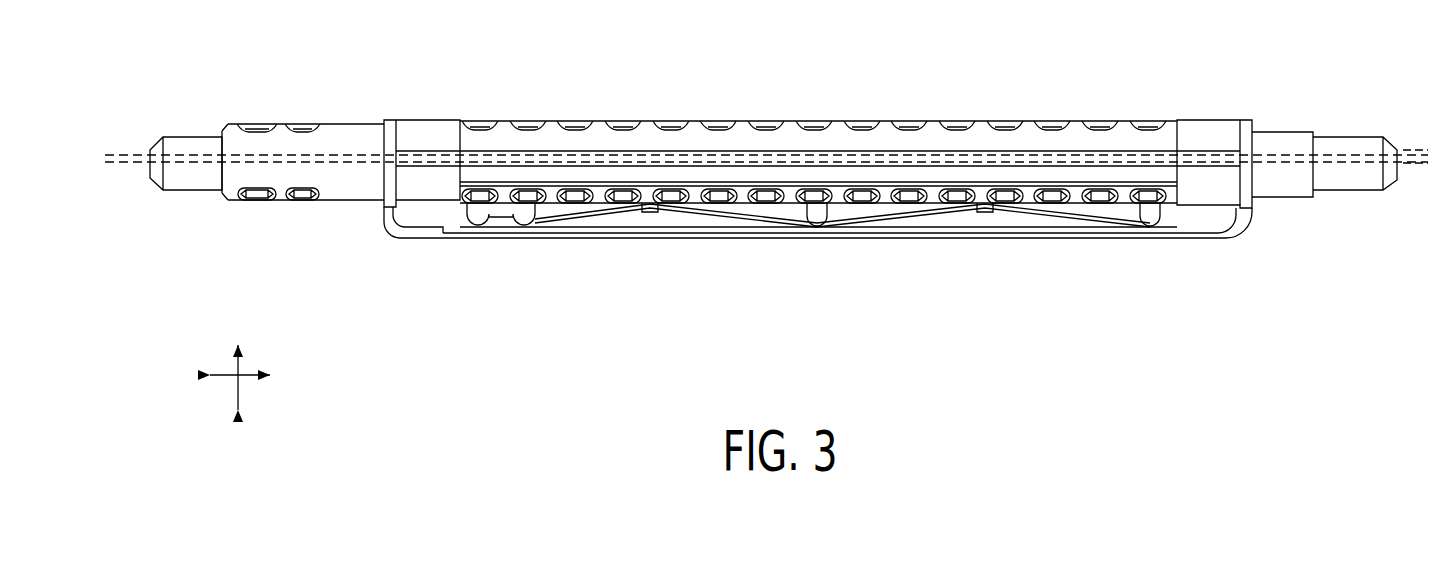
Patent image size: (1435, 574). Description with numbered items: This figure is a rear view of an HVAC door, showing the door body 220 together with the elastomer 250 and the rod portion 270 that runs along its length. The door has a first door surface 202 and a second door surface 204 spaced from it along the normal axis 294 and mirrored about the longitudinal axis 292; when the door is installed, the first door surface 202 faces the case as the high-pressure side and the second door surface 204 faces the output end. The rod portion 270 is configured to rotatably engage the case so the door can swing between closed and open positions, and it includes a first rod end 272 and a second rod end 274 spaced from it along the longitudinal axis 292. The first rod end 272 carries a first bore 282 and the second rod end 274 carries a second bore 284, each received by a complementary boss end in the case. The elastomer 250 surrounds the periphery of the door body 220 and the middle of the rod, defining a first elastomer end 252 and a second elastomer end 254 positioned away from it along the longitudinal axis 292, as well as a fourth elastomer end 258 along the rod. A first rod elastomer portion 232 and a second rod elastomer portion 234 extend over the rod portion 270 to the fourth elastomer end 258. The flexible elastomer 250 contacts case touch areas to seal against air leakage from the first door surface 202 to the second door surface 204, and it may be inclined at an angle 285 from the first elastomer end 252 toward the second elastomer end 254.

The first door surface 202 is at (762, 233).
The second door surface 204 is at (652, 117).
The door body 220 is at (902, 146).
The first rod elastomer portion 232 is at (432, 172).
The second rod elastomer portion 234 is at (1205, 177).
The elastomer 250 is at (1215, 125).
The first elastomer end 252 is at (372, 222).
The second elastomer end 254 is at (1259, 214).
The fourth elastomer end 258 is at (543, 155).
The rod portion 270 is at (383, 110).
The first rod end 272 is at (275, 112).
The second rod end 274 is at (1283, 132).
The first bore 282 is at (190, 150).
The second bore 284 is at (1370, 140).
The angle 285 is at (1410, 120).
The longitudinal axis 292 is at (247, 373).
The normal axis 294 is at (243, 380).